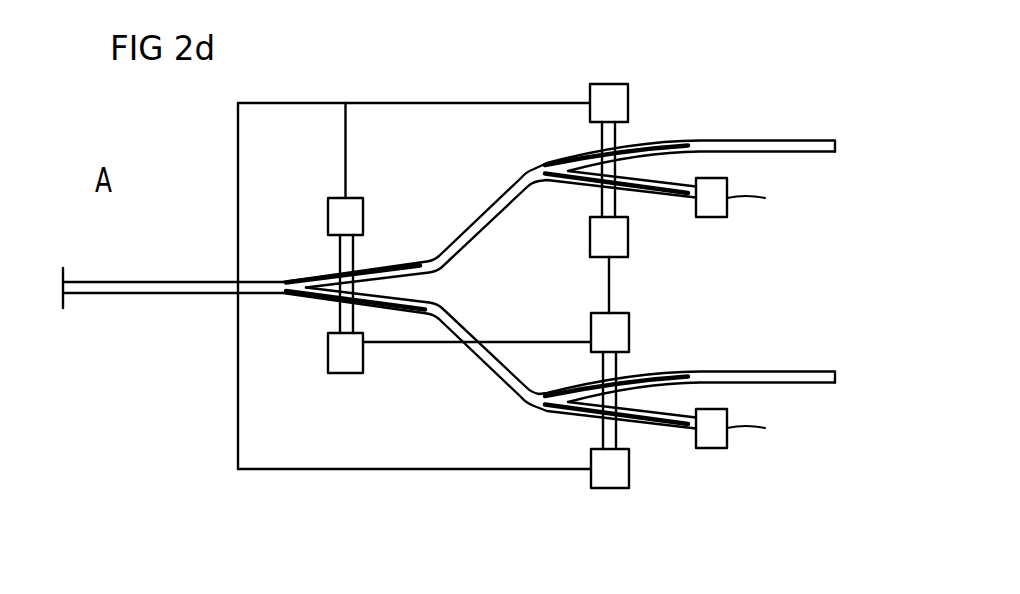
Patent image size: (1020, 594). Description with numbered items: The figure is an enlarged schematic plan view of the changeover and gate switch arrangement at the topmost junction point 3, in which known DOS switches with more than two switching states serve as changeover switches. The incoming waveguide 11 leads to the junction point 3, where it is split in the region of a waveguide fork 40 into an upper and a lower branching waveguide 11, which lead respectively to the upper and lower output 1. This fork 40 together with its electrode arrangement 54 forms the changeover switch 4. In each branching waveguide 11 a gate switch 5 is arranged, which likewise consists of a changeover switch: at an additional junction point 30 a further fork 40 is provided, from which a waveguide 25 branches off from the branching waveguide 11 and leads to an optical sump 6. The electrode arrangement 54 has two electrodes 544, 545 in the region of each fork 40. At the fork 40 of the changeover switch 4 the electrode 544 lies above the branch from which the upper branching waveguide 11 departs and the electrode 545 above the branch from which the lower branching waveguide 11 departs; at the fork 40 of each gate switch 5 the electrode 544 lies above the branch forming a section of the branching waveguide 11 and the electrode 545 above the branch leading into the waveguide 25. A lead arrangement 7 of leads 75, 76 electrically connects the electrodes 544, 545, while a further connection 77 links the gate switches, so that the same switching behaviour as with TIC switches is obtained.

The output 1 is at (837, 380).
The junction point 3 is at (280, 224).
The changeover switch 4 is at (327, 262).
The gate switch 5 is at (651, 110).
The optical sump 6 is at (739, 313).
The lead arrangement 7 is at (398, 473).
The waveguide 11 is at (170, 294).
The waveguide 25 is at (673, 200).
The additional junction point 30 is at (598, 72).
The waveguide fork 40 is at (635, 135).
The electrode arrangement 54 is at (379, 260).
The lead 75 is at (332, 470).
The lead 76 is at (507, 341).
The connecting line 77 is at (607, 284).
The electrode 544 is at (405, 262).
The electrode 545 is at (309, 294).